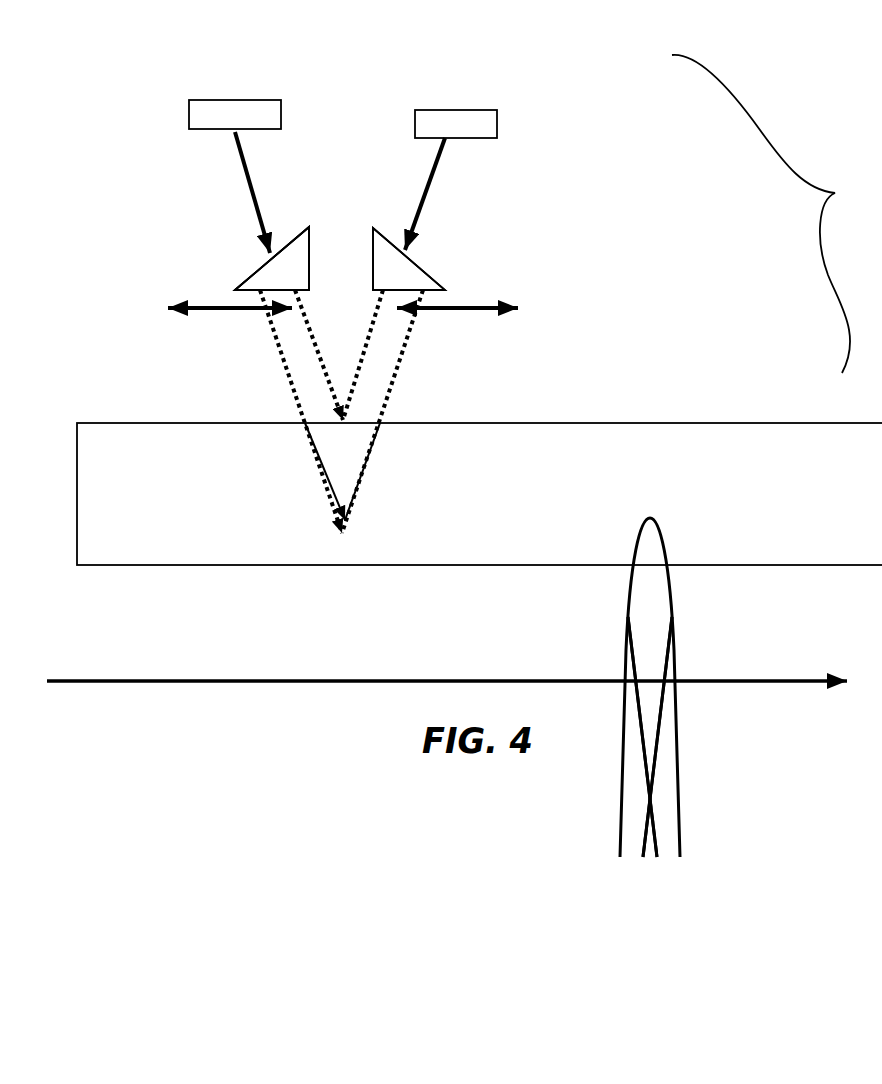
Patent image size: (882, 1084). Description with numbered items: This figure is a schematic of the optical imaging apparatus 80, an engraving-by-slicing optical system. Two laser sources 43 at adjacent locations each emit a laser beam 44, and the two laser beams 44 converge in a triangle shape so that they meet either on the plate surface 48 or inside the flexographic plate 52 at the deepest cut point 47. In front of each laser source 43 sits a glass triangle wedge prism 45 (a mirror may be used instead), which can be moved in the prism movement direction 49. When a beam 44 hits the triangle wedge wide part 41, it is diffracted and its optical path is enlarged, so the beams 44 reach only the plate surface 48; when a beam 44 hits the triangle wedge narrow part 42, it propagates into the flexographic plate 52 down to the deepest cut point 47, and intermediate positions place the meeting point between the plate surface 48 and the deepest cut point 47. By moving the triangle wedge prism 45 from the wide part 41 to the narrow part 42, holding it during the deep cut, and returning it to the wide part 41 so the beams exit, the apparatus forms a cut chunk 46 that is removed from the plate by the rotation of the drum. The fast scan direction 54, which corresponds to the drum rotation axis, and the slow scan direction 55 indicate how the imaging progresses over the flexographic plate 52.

The triangle wedge wide part 41 is at (303, 267).
The triangle wedge narrow part 42 is at (252, 268).
The laser sources 43 is at (237, 100).
The laser beams 44 is at (248, 193).
The triangle wedge prism 45 is at (272, 282).
The cut chunk to be removed 46 is at (329, 453).
The deepest cut point 47 is at (345, 527).
The plate surface 48 is at (757, 423).
The prism movement direction 49 is at (223, 312).
The flexographic plate 52 is at (657, 503).
The fast scan direction 54 is at (622, 617).
The slow scan direction 55 is at (108, 680).
The optical imaging apparatus 80 is at (767, 214).